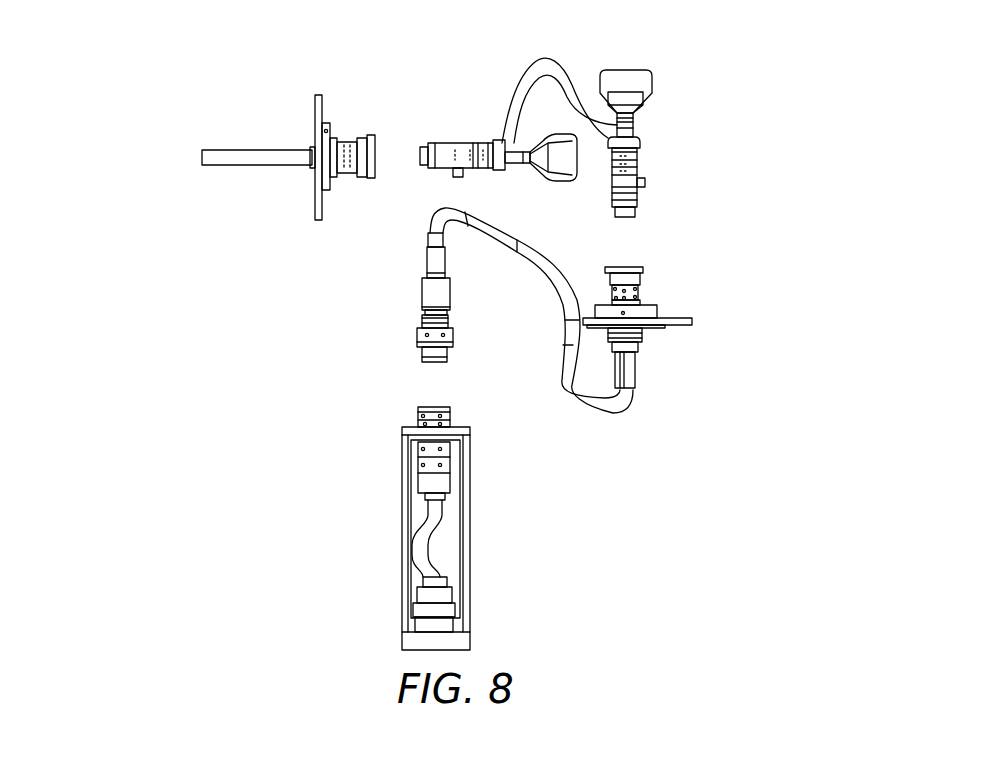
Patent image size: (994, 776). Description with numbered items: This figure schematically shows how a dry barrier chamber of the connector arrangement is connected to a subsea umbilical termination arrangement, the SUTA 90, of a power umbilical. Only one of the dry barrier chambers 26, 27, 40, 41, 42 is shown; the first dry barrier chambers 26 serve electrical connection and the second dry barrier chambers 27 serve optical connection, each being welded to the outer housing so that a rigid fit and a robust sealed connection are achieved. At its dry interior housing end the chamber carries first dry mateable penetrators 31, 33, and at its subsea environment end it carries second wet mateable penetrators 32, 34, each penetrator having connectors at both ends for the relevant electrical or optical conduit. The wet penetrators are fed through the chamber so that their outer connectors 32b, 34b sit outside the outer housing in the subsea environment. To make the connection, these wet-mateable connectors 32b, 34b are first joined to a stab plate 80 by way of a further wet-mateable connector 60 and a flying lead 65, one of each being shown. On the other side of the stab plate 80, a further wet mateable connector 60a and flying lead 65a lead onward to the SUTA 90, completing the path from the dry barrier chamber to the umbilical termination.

The subsea umbilical termination arrangement (SUTA) 90 is at (315, 100).
The flying lead 65a is at (537, 63).
The wet mateable connector 60a is at (631, 219).
The flying lead 65 is at (577, 408).
The wet-mateable connector 60 is at (417, 337).
The stab plate 80 is at (687, 327).
The first dry barrier chamber 26 is at (422, 537).
The second dry barrier chamber 27 is at (422, 537).
The dry barrier chamber 40 is at (422, 537).
The housing 41 is at (422, 537).
The housing 42 is at (422, 537).
The second wet mateable penetrator 32 is at (394, 433).
The second wet mateable penetrator 34 is at (402, 432).
The wet-mateable connector 32b is at (472, 396).
The wet-mateable connector 34b is at (440, 407).
The first dry mateable penetrator 31 is at (477, 640).
The first dry mateable penetrator 33 is at (470, 643).